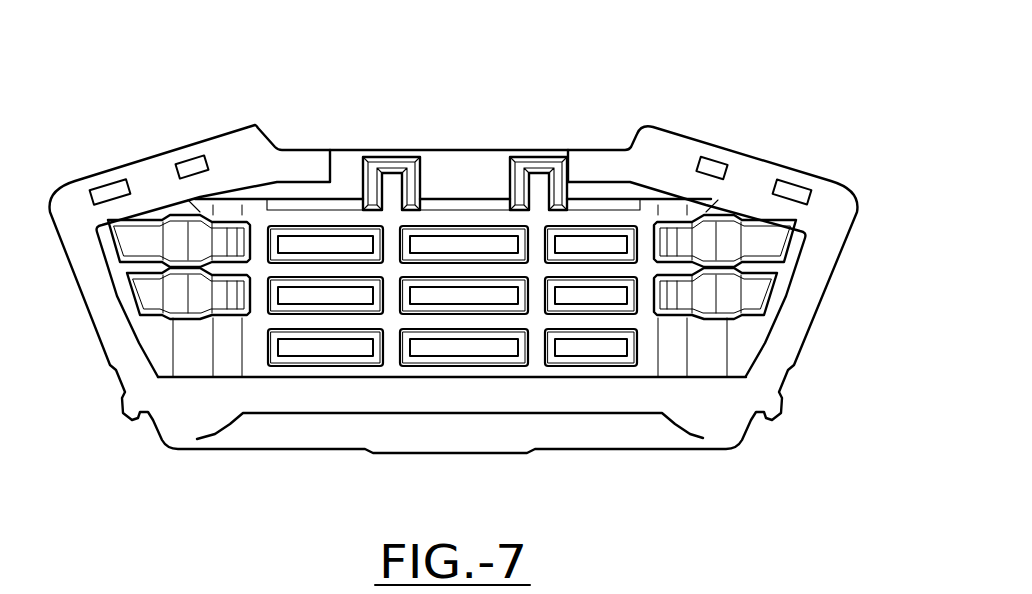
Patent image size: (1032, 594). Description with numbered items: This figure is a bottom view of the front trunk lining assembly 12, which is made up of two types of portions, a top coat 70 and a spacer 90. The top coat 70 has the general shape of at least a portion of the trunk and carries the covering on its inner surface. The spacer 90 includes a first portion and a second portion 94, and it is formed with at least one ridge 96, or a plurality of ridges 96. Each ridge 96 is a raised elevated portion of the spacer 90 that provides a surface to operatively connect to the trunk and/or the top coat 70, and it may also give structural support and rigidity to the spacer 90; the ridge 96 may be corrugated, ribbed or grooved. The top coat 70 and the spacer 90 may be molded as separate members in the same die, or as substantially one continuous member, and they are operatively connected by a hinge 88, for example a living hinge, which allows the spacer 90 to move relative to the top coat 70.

The front trunk lining assembly 12 is at (741, 102).
The top coat 70 is at (617, 470).
The hinge 88 is at (461, 125).
The spacer 90 is at (180, 344).
The second portion 94 is at (302, 347).
The ridge 96 is at (303, 242).